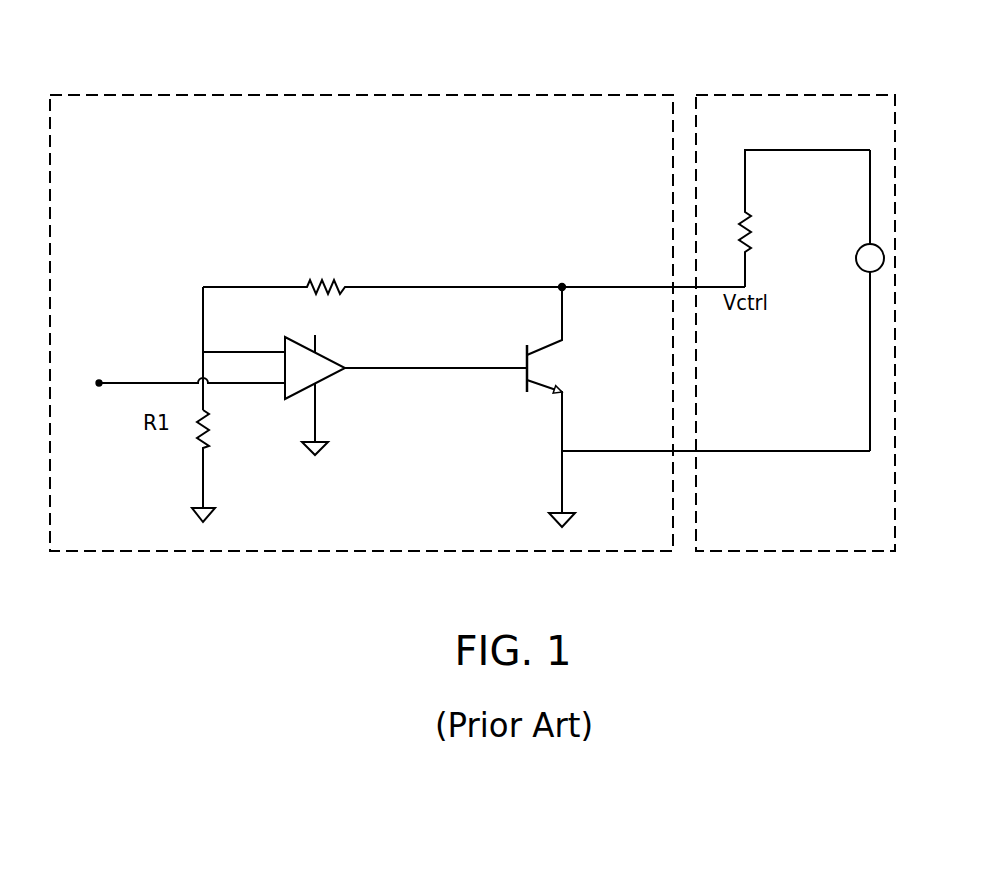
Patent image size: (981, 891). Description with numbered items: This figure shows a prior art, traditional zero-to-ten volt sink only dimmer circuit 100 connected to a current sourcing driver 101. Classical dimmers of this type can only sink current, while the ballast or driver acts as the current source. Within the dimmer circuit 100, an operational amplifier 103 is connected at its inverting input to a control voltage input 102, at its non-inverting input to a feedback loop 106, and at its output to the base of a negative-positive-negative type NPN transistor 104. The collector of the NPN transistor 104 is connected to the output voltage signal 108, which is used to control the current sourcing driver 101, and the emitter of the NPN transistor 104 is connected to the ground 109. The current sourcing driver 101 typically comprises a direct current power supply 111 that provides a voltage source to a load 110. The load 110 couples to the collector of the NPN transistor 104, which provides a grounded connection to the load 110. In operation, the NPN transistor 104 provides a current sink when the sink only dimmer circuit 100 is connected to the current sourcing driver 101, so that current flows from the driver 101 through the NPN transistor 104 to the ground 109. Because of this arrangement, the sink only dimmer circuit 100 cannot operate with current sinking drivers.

The sink only dimmer circuit 100 is at (461, 93).
The current sourcing driver 101 is at (783, 92).
The control voltage input Vin 102 is at (76, 366).
The operational amplifier 103 is at (326, 387).
The NPN transistor 104 is at (545, 393).
The feedback loop 106 is at (437, 287).
The output voltage signal Vout 108 is at (558, 253).
The ground 109 is at (552, 514).
The load 110 is at (757, 217).
The DC power supply 111 is at (863, 268).